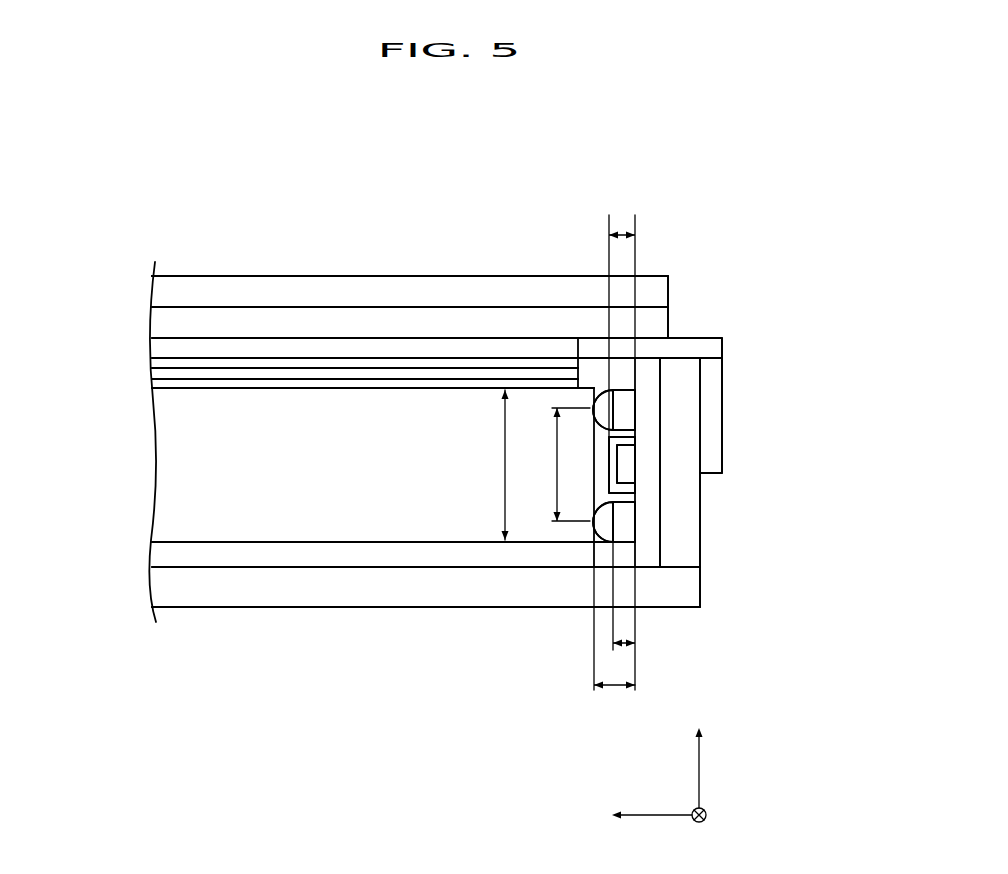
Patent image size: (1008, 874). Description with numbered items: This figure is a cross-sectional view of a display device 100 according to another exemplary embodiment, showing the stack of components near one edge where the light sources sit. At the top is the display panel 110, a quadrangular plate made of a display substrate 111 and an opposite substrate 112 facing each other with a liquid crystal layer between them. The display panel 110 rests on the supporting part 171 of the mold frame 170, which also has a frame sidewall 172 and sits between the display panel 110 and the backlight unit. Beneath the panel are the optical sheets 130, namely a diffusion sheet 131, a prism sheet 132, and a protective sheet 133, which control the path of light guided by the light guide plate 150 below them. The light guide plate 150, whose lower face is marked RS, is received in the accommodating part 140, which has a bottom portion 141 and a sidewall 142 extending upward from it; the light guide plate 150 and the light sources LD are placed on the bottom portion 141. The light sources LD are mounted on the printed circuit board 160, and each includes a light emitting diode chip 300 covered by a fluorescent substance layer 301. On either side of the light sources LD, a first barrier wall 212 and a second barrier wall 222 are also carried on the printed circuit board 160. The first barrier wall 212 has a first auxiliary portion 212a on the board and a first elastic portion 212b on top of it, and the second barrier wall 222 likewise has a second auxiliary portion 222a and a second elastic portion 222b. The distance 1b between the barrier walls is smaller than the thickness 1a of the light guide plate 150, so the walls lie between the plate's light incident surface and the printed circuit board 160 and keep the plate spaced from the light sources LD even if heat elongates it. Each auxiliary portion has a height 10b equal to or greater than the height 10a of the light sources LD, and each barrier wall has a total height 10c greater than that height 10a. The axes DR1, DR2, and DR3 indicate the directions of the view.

The display device 100 is at (723, 260).
The display panel 110 is at (465, 208).
The display substrate 111 is at (473, 317).
The opposite substrate 112 is at (538, 287).
The optical sheets 130 is at (74, 340).
The diffusion sheet 131 is at (153, 383).
The prism sheet 132 is at (153, 372).
The protective sheet 133 is at (153, 362).
The accommodating part 140 is at (805, 567).
The bottom portion 141 is at (647, 592).
The sidewall 142 is at (693, 560).
The light guide plate 150 is at (160, 463).
The printed circuit board 160 is at (648, 370).
The mold frame 170 is at (805, 317).
The supporting part 171 is at (690, 337).
The frame sidewall 172 is at (717, 373).
The first barrier wall 212 is at (818, 390).
The first auxiliary portion 212a is at (627, 415).
The first elastic portion 212b is at (618, 405).
The second barrier wall 222 is at (818, 507).
The second auxiliary portion 222a is at (627, 532).
The second elastic portion 222b is at (605, 523).
The light emitting diode chip 300 is at (628, 467).
The fluorescent substance layer 301 is at (638, 440).
The light sources LD is at (805, 450).
The reflective sheet RS is at (160, 553).
The thickness of the light guide plate 1a is at (493, 465).
The distance between the first and second barrier walls 1b is at (559, 464).
The height of each light source 10a is at (623, 322).
The height of each auxiliary portion 10b is at (617, 616).
The height of each barrier wall 10c is at (614, 640).
The first direction DR1 is at (722, 815).
The second direction DR2 is at (630, 815).
The third direction DR3 is at (698, 754).